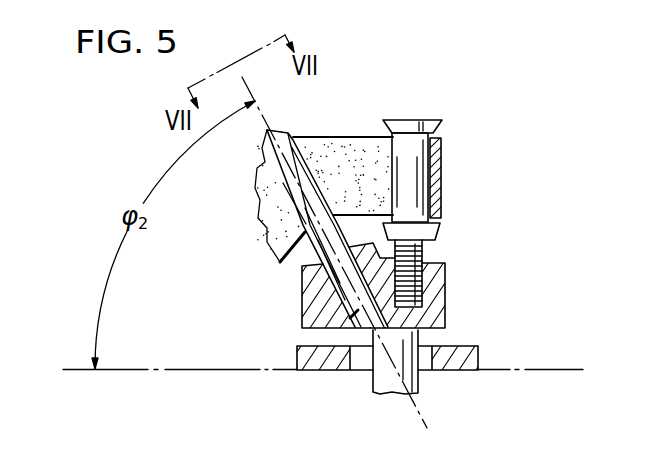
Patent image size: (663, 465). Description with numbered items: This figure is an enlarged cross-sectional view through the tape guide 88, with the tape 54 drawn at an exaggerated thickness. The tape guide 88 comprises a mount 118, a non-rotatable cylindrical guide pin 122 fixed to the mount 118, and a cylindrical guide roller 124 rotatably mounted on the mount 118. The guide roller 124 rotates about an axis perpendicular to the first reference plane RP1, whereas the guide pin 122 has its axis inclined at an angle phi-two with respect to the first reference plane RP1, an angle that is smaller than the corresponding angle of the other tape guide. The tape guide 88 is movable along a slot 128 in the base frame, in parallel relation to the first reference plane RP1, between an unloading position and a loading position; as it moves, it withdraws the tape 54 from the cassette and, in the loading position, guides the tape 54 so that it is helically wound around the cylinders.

The tape 54 is at (343, 149).
The tape guide 88 is at (452, 182).
The mount 118 is at (445, 266).
The guide pin 122 is at (279, 131).
The guide roller 124 is at (404, 120).
The slot 128 is at (355, 363).
The first reference plane RP1 is at (537, 372).